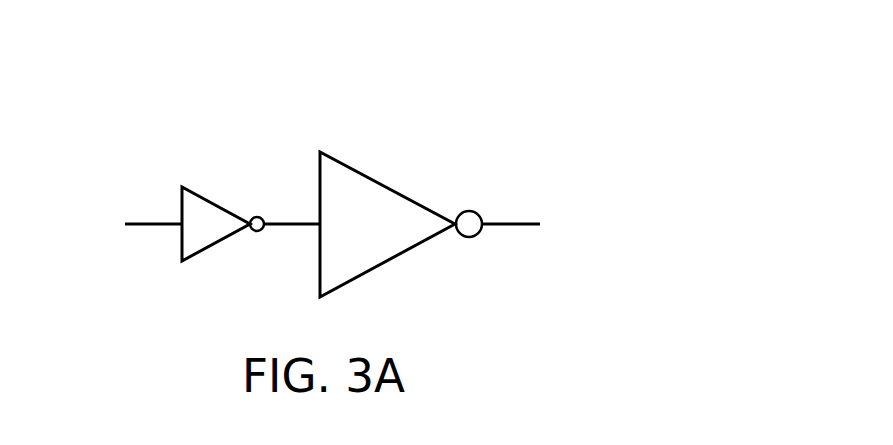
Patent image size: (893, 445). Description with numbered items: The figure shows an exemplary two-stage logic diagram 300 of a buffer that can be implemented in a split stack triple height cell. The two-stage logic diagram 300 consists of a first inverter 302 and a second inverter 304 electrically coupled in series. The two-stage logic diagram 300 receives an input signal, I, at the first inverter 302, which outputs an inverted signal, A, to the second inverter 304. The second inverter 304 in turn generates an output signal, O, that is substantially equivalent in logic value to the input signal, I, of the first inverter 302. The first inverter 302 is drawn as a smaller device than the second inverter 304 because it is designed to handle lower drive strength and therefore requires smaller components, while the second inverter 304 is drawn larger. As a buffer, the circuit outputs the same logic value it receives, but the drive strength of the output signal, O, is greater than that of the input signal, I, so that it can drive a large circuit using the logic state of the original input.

The two-stage logic diagram 300 is at (440, 96).
The first inverter 302 is at (217, 202).
The second inverter 304 is at (353, 167).